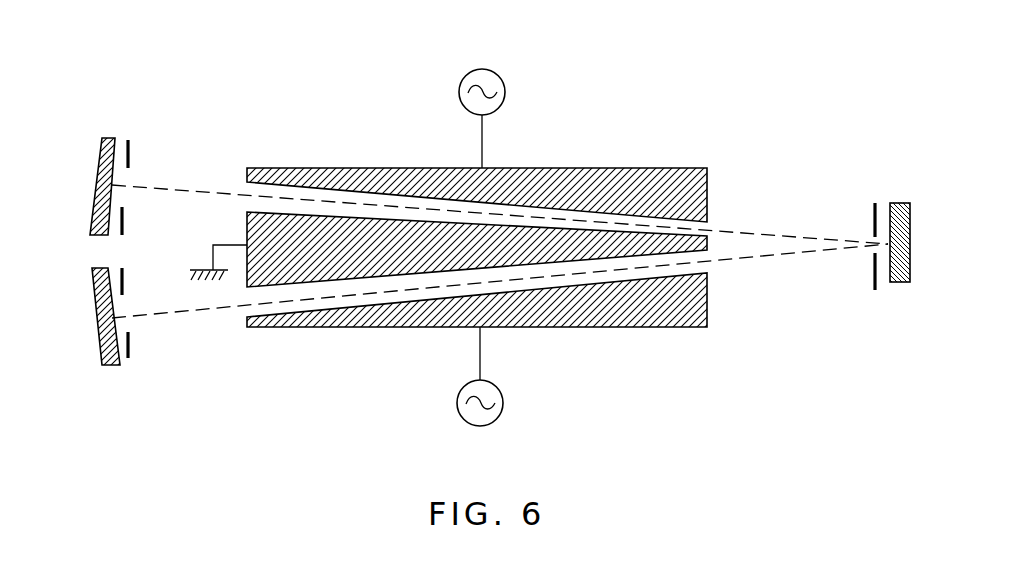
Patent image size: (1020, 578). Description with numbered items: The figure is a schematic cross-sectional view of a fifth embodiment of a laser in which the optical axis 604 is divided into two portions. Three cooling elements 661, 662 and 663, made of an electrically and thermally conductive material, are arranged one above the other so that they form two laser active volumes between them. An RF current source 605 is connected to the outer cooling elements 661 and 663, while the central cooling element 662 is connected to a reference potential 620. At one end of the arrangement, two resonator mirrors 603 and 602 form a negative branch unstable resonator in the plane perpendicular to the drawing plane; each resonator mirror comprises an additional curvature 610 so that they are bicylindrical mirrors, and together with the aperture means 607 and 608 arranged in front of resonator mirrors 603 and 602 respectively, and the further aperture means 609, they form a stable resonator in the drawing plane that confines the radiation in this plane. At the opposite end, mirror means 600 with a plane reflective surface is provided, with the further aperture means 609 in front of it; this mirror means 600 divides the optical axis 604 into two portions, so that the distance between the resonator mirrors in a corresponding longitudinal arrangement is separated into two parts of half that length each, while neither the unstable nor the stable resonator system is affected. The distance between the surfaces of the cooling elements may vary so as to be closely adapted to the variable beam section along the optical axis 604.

The mirror means 600 is at (899, 203).
The resonator mirror 602 is at (100, 332).
The resonator mirror 603 is at (97, 181).
The optical axis 604 is at (500, 240).
The RF current source 605 is at (504, 84).
The aperture means 607 is at (132, 153).
The aperture means 608 is at (130, 345).
The further aperture means 609 is at (873, 221).
The additional curvature 610 is at (116, 140).
The reference potential 620 is at (216, 276).
The cooling element 661 is at (639, 168).
The cooling element 662 is at (707, 244).
The cooling element 663 is at (637, 327).